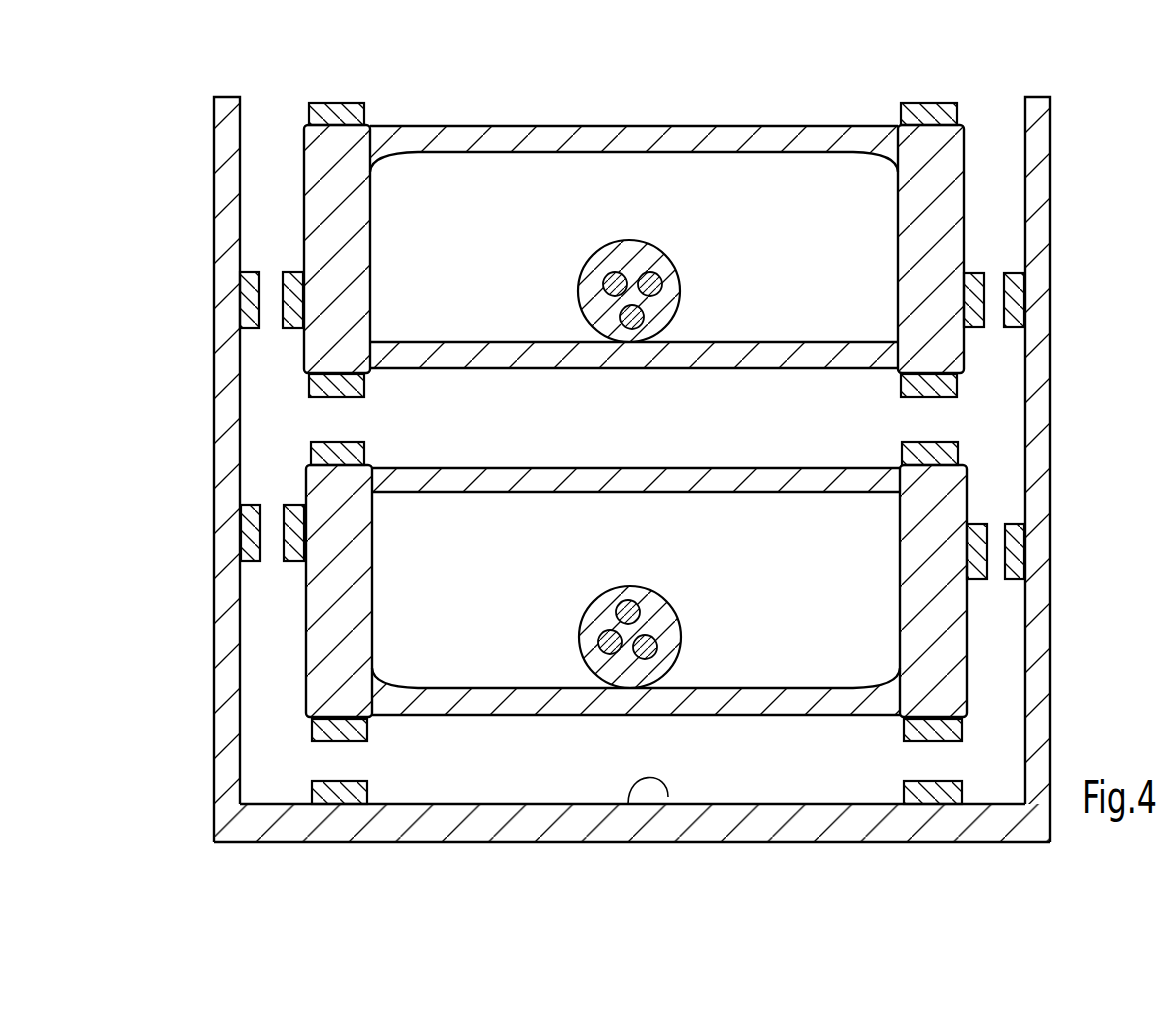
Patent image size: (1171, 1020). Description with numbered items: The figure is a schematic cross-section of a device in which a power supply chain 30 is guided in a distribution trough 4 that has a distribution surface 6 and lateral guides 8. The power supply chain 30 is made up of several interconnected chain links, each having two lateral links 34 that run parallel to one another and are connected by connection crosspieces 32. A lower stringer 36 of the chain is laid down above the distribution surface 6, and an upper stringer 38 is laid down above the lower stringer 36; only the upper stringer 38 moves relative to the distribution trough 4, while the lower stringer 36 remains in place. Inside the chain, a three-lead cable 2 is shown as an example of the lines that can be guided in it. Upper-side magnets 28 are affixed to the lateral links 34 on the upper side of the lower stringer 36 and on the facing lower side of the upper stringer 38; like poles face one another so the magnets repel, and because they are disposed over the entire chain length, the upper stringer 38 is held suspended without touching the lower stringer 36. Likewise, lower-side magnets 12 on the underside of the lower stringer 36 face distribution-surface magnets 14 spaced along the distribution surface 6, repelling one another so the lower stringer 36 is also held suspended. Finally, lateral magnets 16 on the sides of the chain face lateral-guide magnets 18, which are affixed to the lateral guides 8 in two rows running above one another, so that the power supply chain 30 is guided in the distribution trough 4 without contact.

The three-lead cable 2 is at (655, 268).
The distribution trough 4 is at (525, 815).
The distribution surface 6 is at (668, 797).
The lateral guides 8 is at (225, 482).
The lower-side magnets 12 is at (343, 103).
The distribution-surface magnets 14 is at (353, 797).
The lateral magnets 16 is at (297, 510).
The lateral-guide magnets 18 is at (243, 300).
The upper-side magnets 28 is at (347, 442).
The power supply chain 30 is at (641, 399).
The connection crosspieces 32 is at (468, 353).
The lateral links 34 is at (343, 235).
The lower stringer 36 is at (764, 650).
The upper stringer 38 is at (768, 285).